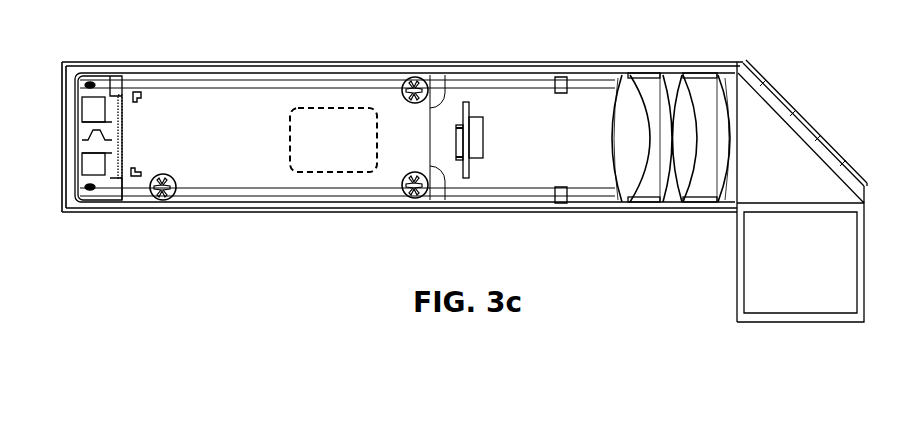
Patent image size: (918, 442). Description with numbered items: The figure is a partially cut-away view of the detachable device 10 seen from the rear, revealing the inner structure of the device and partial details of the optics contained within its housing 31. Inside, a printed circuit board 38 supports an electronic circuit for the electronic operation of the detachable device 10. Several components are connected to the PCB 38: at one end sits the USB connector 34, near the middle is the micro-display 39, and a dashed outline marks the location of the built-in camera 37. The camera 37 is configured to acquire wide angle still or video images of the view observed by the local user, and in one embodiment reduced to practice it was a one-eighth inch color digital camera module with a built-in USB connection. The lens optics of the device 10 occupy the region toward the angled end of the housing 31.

The detachable device 10 is at (464, 161).
The housing cover 31 is at (480, 68).
The USB connector 34 is at (100, 190).
The built-in camera 37 is at (347, 149).
The printed circuit board 38 is at (273, 149).
The micro-display 39 is at (492, 141).